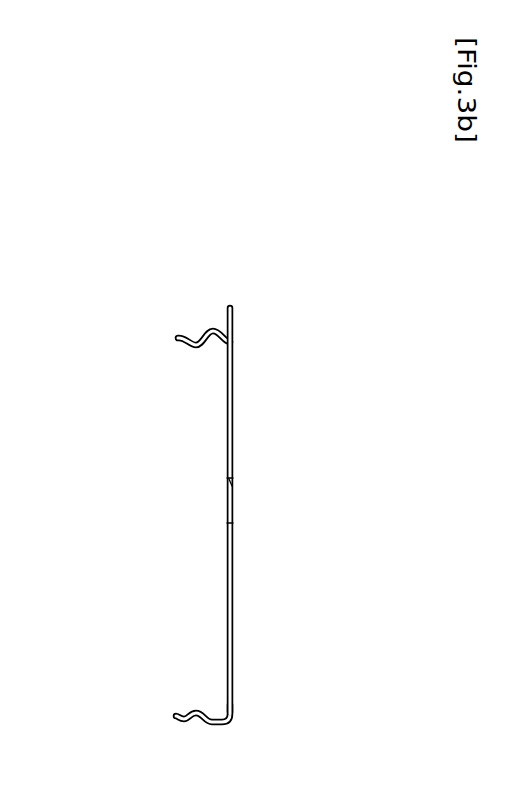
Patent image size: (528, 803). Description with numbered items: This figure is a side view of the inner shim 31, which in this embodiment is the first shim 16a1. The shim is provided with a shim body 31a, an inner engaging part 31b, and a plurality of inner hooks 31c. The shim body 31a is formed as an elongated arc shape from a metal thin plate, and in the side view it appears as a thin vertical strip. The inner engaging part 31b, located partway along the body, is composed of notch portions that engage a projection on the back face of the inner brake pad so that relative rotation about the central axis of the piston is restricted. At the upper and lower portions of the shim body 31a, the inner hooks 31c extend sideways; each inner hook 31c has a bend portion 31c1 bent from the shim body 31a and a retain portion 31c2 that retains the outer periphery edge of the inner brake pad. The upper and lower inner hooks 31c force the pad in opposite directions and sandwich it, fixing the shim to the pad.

The first shim 16a1 is at (257, 370).
The inner shim 31 is at (236, 523).
The shim body 31a is at (233, 411).
The inner engaging part 31b is at (237, 498).
The inner hook 31c is at (187, 332).
The bend portion 31c1 is at (212, 329).
The retain portion 31c2 is at (194, 351).